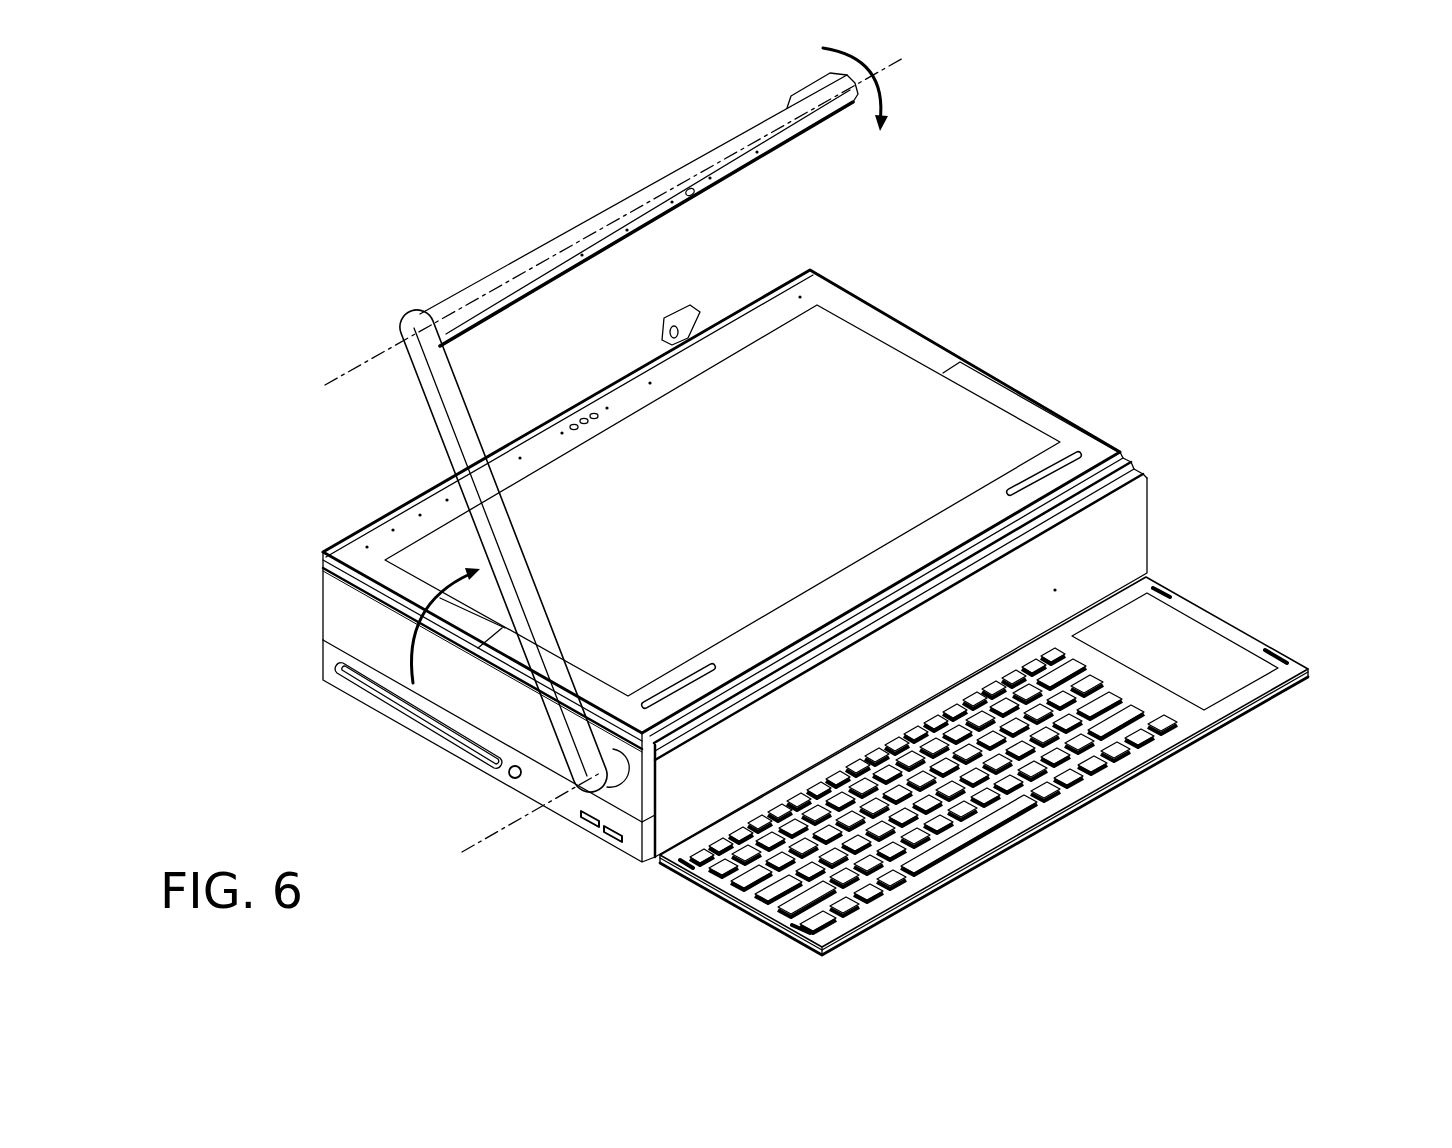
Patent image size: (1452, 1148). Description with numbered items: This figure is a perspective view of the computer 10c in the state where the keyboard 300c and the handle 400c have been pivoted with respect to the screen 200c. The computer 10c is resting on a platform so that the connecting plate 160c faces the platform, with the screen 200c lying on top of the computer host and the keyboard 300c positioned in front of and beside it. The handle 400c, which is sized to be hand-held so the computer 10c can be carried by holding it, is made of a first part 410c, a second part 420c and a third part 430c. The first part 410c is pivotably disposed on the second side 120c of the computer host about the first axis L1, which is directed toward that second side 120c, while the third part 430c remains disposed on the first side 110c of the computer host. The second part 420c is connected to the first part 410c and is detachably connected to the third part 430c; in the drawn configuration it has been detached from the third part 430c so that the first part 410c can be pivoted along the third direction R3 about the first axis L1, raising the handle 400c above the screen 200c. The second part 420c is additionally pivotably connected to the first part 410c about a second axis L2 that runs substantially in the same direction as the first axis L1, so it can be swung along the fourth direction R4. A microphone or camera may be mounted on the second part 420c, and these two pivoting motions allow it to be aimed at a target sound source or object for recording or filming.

The computer 10c is at (268, 121).
The first side 110c is at (322, 579).
The second side 120c is at (374, 624).
The connecting plate 160c is at (388, 681).
The screen 200c is at (1000, 398).
The keyboard 300c is at (1280, 702).
The handle 400c is at (333, 293).
The first part 410c is at (438, 410).
The second part 420c is at (598, 213).
The third part 430c is at (688, 312).
The first axis L1 is at (515, 820).
The second axis L2 is at (872, 76).
The third direction R3 is at (431, 625).
The fourth direction R4 is at (868, 89).